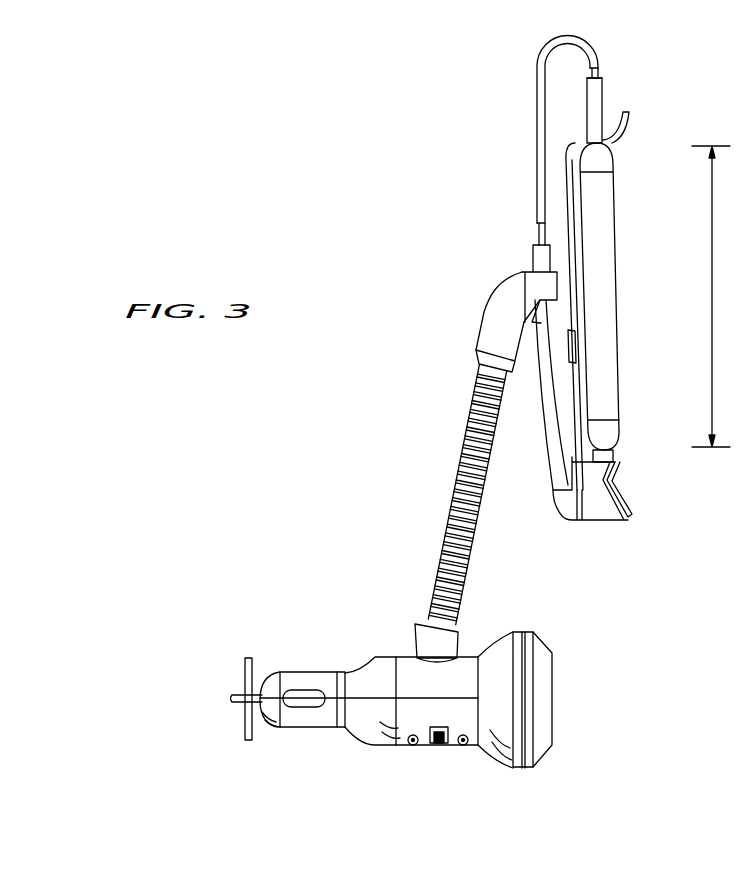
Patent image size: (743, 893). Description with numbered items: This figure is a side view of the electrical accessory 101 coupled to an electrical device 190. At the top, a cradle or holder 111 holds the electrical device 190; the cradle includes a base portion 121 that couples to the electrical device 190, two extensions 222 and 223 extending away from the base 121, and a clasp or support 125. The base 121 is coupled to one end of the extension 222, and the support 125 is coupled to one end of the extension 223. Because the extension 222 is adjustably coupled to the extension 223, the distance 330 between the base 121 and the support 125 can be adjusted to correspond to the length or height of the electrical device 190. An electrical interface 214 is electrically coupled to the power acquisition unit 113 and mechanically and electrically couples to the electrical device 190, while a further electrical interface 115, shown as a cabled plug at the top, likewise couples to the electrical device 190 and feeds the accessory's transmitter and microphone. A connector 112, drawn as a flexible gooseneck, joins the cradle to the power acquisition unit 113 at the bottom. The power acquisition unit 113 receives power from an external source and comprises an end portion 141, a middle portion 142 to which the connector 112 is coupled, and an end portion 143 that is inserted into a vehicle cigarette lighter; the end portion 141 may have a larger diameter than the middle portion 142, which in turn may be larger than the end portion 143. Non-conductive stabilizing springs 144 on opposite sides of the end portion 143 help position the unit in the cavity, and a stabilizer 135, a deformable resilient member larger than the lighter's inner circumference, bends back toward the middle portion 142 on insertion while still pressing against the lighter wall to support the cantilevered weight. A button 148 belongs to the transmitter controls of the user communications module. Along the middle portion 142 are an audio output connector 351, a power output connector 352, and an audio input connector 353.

The electrical accessory 101 is at (376, 105).
The electrical interface 115 is at (610, 68).
The clasp or support 125 is at (610, 147).
The extension 223 is at (538, 222).
The electrical device 190 is at (605, 263).
The distance 330 is at (713, 296).
The connector 112 is at (458, 492).
The extension 222 is at (565, 398).
The electrical interface 214 is at (622, 458).
The cradle or holder 111 is at (632, 515).
The base portion 121 is at (600, 520).
The middle portion 142 is at (412, 645).
The power acquisition unit 113 is at (378, 660).
The end portion 141 is at (505, 640).
The button 148 is at (547, 672).
The end portion 143 is at (302, 678).
The stabilizer 135 is at (245, 720).
The stabilizing springs 144 is at (305, 708).
The audio output connector 351 is at (410, 746).
The power output connector 352 is at (440, 746).
The audio input connector 353 is at (466, 746).